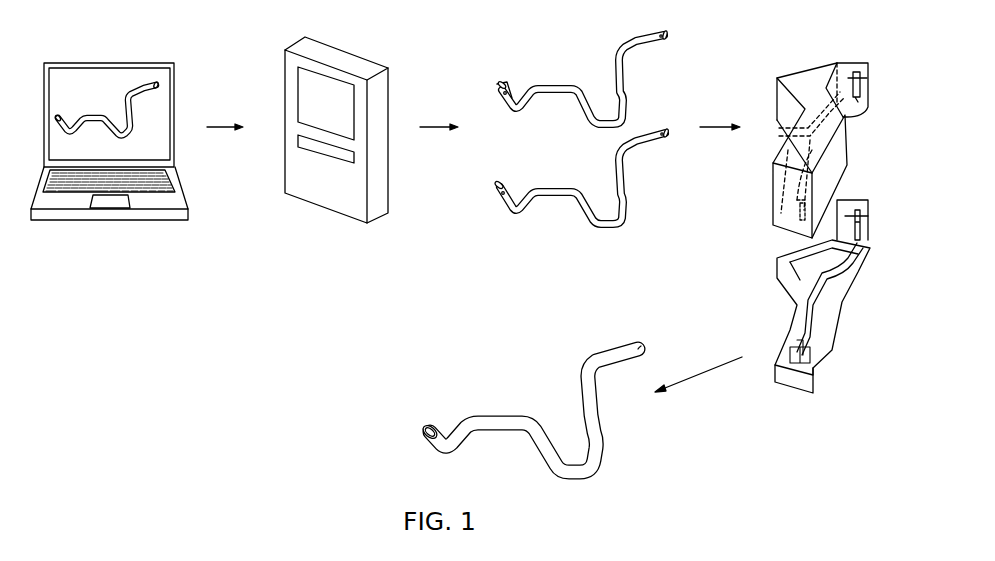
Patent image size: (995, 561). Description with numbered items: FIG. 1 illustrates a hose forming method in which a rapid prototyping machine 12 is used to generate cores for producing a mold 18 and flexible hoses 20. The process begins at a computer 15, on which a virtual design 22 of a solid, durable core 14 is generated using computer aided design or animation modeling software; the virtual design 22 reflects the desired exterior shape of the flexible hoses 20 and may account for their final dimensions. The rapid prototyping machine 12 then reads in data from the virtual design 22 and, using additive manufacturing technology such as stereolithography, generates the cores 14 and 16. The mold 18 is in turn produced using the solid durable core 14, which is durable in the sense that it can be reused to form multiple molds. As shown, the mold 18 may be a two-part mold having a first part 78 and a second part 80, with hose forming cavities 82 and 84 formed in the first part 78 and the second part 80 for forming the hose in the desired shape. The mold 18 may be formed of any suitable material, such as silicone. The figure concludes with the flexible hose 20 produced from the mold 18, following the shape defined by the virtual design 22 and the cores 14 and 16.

The computer 15 is at (44, 221).
The virtual design 22 is at (135, 74).
The rapid prototyping machine 12 is at (352, 62).
The core 14 is at (558, 86).
The core 16 is at (561, 194).
The mold 18 is at (868, 93).
The second part 80 is at (868, 74).
The hose forming cavity 84 is at (827, 170).
The hose forming cavity 82 is at (822, 295).
The first part 78 is at (840, 325).
The flexible hose 20 is at (503, 416).